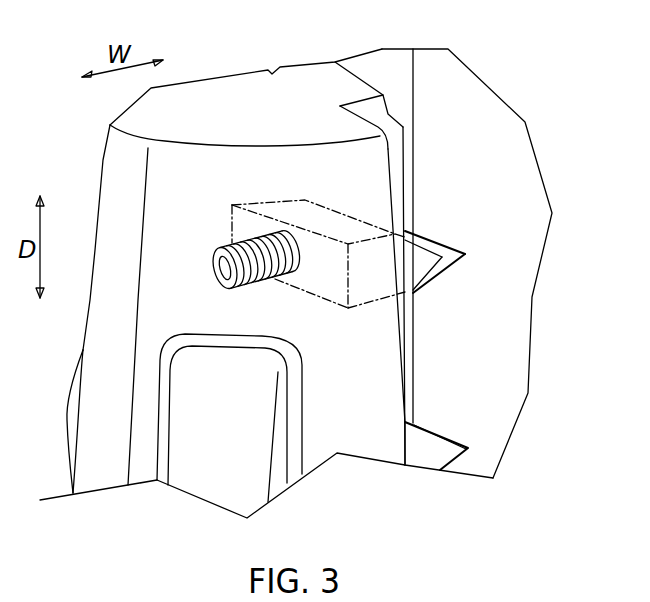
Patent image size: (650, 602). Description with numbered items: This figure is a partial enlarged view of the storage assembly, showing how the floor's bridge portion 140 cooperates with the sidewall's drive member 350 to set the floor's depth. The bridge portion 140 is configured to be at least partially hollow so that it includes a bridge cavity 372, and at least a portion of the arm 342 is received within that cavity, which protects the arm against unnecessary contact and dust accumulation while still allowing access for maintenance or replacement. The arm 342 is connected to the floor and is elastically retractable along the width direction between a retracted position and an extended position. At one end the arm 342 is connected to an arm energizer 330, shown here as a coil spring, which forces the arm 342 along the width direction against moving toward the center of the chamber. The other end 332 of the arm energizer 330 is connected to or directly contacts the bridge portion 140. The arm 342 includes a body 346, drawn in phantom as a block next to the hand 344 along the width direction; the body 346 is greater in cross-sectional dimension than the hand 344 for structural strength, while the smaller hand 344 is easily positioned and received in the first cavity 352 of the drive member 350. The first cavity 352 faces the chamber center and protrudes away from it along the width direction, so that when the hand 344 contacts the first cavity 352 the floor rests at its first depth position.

The bridge portion 140 is at (261, 85).
The bridge cavity 372 is at (233, 105).
The drive member 350 is at (458, 106).
The first cavity 352 is at (455, 250).
The hand 344 is at (418, 260).
The body 346 is at (328, 208).
The arm 342 is at (357, 307).
The arm energizer 330 is at (262, 270).
The other end 332 is at (213, 258).